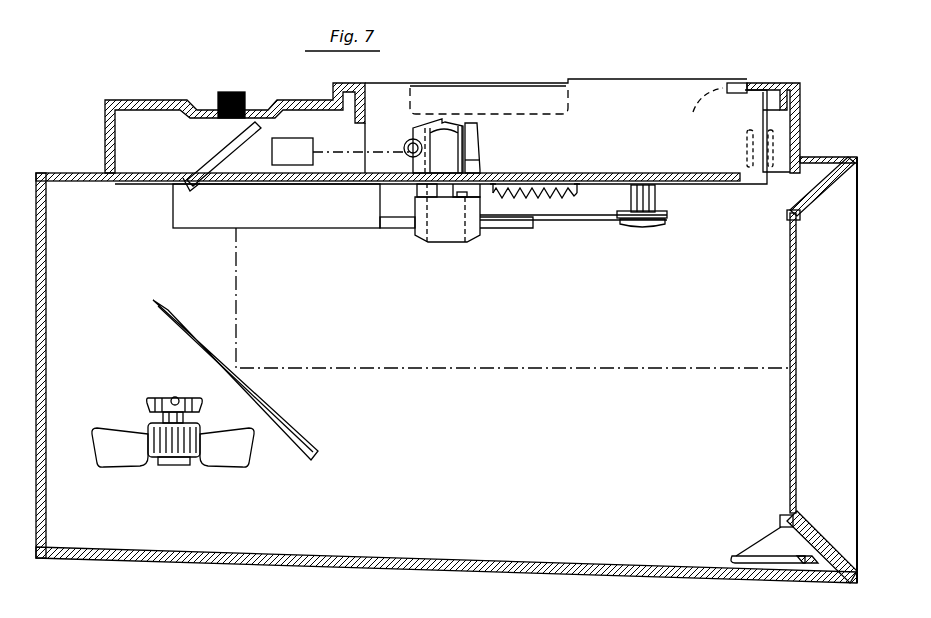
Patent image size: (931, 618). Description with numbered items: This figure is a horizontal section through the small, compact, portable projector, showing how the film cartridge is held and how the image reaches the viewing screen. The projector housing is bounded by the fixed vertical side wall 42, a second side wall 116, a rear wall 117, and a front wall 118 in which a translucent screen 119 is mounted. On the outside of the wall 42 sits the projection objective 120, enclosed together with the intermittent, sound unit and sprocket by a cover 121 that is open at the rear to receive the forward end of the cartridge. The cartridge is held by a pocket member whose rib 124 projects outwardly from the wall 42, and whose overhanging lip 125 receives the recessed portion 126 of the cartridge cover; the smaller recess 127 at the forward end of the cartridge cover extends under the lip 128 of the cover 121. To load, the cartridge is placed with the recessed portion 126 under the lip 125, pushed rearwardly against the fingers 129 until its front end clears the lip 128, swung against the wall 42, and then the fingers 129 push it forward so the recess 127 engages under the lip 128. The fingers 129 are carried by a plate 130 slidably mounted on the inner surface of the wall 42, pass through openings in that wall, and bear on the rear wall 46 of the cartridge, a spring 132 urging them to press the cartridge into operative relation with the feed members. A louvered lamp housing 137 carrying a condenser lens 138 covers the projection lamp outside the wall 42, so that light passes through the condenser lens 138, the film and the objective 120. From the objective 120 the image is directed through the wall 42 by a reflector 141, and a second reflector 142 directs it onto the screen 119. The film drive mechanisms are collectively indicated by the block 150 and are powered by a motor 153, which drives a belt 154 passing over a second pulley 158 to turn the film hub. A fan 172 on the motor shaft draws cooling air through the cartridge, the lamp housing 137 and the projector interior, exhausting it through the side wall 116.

The vertical side wall 42 is at (556, 172).
The rear wall 46 is at (780, 106).
The second side wall 116 is at (290, 548).
The rear wall 117 is at (46, 352).
The front wall 118 is at (822, 541).
The translucent screen 119 is at (790, 480).
The projection objective 120 is at (296, 140).
The cover 121 is at (141, 99).
The rib 124 is at (738, 83).
The overhanging lip 125 is at (765, 82).
The recessed portion 126 is at (697, 112).
The recess 127 is at (368, 93).
The lip 128 is at (368, 84).
The fingers 129 is at (768, 147).
The plate 130 is at (698, 186).
The spring 132 is at (535, 201).
The lamp housing 137 is at (480, 138).
The condenser lens 138 is at (408, 145).
The reflector 141 is at (222, 154).
The second reflector 142 is at (300, 411).
The drive mechanisms block 150 is at (300, 230).
The motor 153 is at (172, 398).
The belt 154 is at (566, 222).
The second pulley 158 is at (650, 230).
The fan 172 is at (230, 462).